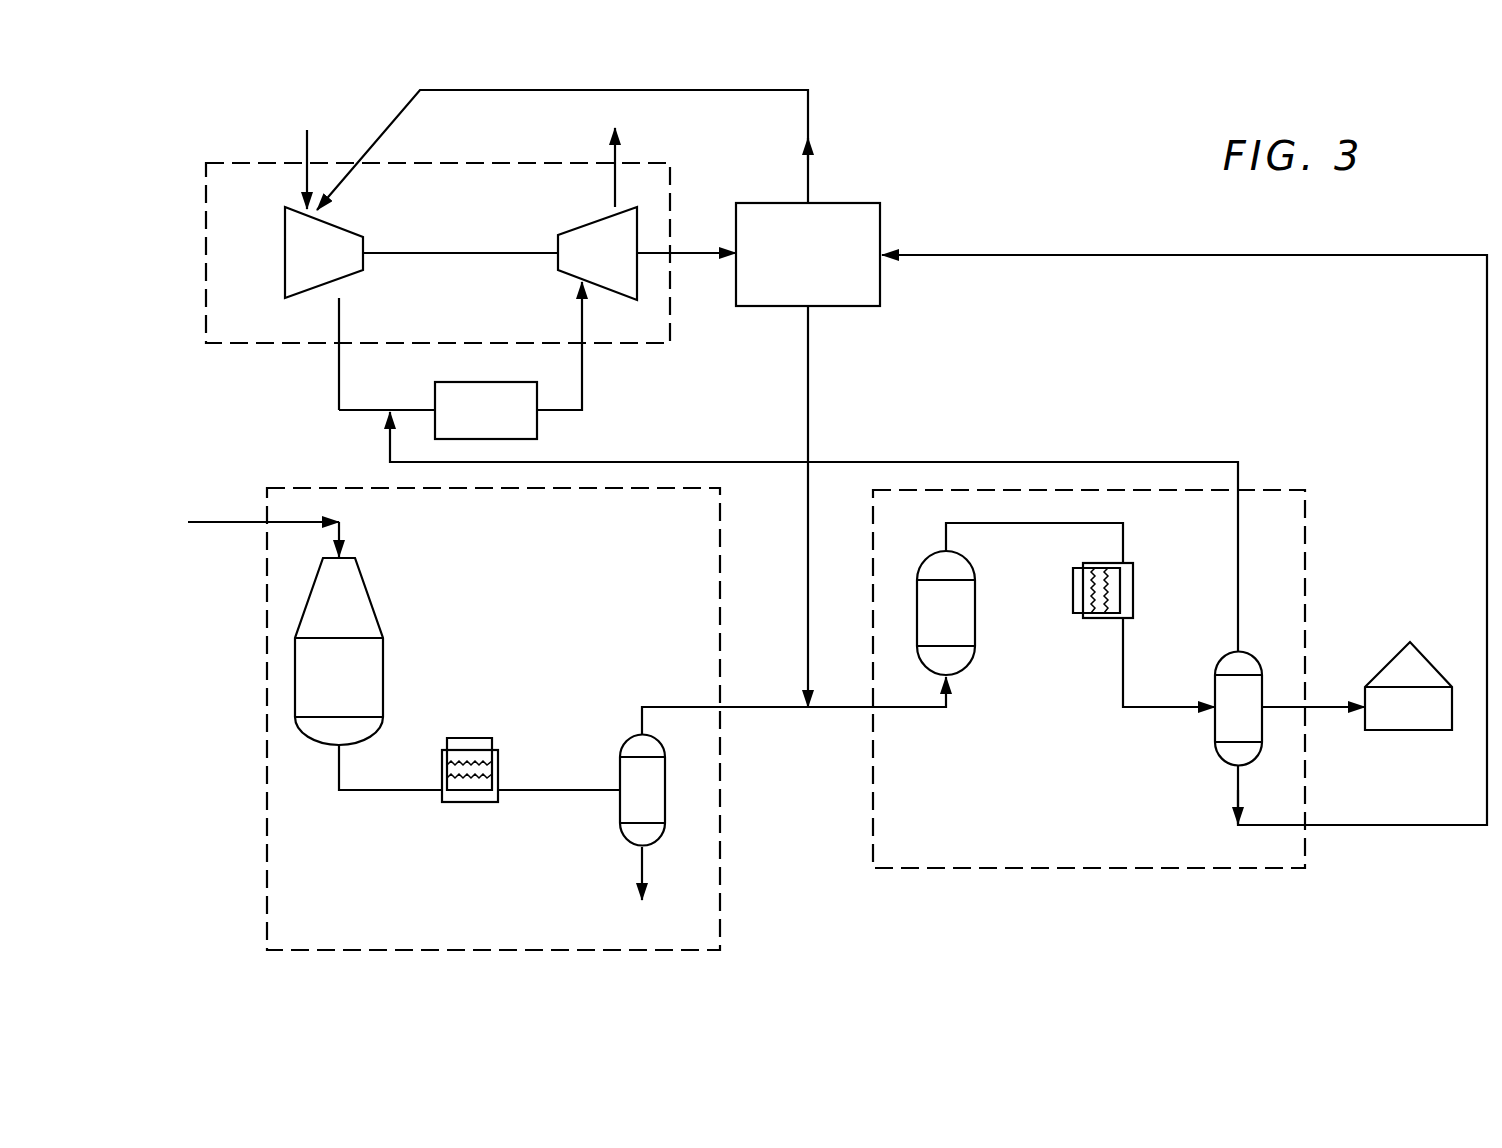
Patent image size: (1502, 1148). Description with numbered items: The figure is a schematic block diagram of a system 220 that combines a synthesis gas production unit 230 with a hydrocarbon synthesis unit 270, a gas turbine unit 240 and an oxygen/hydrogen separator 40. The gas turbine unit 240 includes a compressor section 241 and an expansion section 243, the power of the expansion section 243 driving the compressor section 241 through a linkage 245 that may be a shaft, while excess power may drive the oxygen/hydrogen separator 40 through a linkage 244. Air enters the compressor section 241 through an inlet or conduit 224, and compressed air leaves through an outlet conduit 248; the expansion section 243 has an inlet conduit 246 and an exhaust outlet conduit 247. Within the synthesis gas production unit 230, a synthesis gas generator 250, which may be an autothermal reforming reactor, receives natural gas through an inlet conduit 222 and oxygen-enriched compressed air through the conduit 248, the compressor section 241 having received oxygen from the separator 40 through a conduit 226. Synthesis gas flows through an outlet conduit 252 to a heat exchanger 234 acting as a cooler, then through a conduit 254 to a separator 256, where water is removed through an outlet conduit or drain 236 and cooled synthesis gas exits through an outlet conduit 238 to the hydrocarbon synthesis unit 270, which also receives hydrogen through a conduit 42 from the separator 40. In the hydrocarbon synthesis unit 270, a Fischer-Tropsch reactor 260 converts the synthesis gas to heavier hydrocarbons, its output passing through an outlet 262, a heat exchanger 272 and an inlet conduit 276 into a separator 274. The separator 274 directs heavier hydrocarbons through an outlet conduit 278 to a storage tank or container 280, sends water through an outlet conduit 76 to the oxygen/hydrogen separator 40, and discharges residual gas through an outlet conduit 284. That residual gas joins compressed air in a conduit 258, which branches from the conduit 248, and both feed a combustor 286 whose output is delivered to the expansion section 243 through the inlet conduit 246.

The system 220 is at (1098, 168).
The inlet conduit 222 is at (212, 520).
The inlet or conduit 224 is at (304, 181).
The conduit 226 is at (808, 117).
The synthesis gas production unit 230 is at (266, 889).
The heat exchanger 234 is at (467, 803).
The outlet conduit or drain 236 is at (638, 866).
The outlet conduit 238 is at (669, 707).
The gas turbine unit 240 is at (206, 234).
The compressor section 241 is at (324, 252).
The expansion section 243 is at (597, 253).
The linkage 244 is at (683, 248).
The linkage 245 is at (463, 252).
The inlet conduit 246 is at (582, 378).
The outlet conduit 247 is at (612, 182).
The outlet conduit 248 is at (341, 317).
The synthesis gas generator 250 is at (339, 633).
The outlet conduit 252 is at (380, 793).
The conduit 254 is at (553, 793).
The separator 256 is at (618, 768).
The conduit 258 is at (360, 406).
The Fischer-Tropsch reactor 260 is at (975, 612).
The outlet 262 is at (1005, 524).
The hydrocarbon synthesis unit 270 is at (1118, 870).
The heat exchanger 272 is at (1133, 592).
The separator 274 is at (1214, 733).
The inlet conduit 276 is at (1121, 675).
The outlet conduit 278 is at (1323, 708).
The storage tank or container 280 is at (1432, 731).
The outlet conduit 284 is at (1143, 462).
The combustor 286 is at (537, 425).
The oxygen/hydrogen separator 40 is at (880, 226).
The conduit 42 is at (808, 410).
The outlet conduit 76 is at (1362, 255).